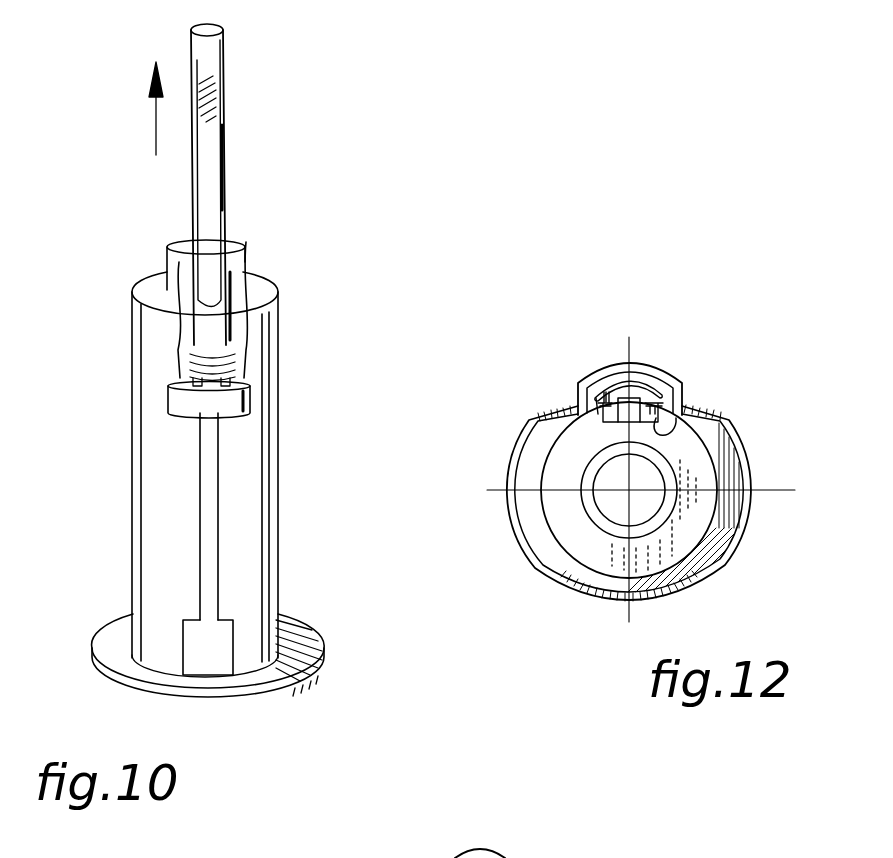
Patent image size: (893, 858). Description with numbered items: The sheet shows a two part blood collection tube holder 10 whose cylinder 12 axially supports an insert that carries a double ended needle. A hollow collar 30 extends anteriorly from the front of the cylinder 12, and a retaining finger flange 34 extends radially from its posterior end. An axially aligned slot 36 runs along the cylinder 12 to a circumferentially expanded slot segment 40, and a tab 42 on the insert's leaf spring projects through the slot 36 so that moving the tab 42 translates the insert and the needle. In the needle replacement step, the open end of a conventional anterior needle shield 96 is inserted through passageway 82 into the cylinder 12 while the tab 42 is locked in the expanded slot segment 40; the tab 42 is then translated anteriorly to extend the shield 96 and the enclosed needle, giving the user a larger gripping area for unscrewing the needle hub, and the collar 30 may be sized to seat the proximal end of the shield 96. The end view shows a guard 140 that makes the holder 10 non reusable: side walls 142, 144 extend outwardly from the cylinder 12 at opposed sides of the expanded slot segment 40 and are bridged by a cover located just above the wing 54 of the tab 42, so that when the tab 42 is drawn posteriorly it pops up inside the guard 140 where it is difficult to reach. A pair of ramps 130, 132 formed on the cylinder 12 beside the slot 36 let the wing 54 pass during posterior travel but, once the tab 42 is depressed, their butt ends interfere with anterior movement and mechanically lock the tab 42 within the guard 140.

In FIG. 10, the blood collection tube holder 10 is at (85, 592).
In FIG. 10, the cylinder 12 is at (283, 479).
In FIG. 12, the cylinder 12 is at (716, 448).
In FIG. 10, the collar 30 is at (242, 265).
In FIG. 10, the retaining finger flange 34 is at (304, 654).
In FIG. 12, the retaining finger flange 34 is at (735, 533).
In FIG. 10, the axially aligned slot 36 is at (222, 530).
In FIG. 10, the second circumferentially expanded slot segment 40 is at (236, 636).
In FIG. 12, the second circumferentially expanded slot segment 40 is at (686, 408).
In FIG. 10, the tab 42 is at (250, 384).
In FIG. 10, the passageway 82 is at (233, 238).
In FIG. 10, the shield 96 is at (227, 188).
In FIG. 12, the wing 54 is at (636, 388).
In FIG. 12, the ramp 130 is at (660, 400).
In FIG. 12, the ramp 132 is at (604, 370).
In FIG. 12, the guard 140 is at (605, 383).
In FIG. 12, the side wall 142 is at (597, 394).
In FIG. 12, the side wall 144 is at (678, 392).